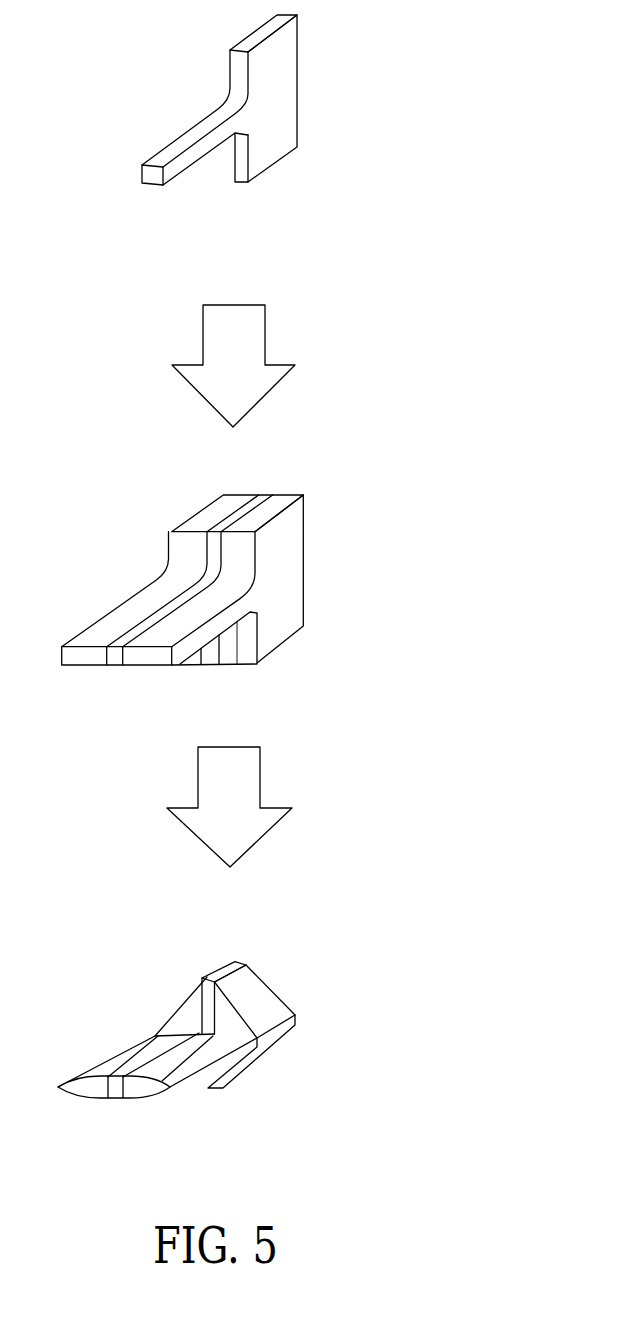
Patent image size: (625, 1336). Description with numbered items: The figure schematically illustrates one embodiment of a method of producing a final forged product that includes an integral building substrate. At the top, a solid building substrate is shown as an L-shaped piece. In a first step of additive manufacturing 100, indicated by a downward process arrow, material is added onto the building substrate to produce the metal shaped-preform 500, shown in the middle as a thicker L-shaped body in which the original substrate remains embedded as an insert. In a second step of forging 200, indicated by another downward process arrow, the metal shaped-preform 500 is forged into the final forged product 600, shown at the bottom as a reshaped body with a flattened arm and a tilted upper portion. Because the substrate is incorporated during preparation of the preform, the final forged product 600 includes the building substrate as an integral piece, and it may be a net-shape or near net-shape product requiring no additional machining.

The metal shaped-preform 500 is at (261, 531).
The final forged product 600 is at (244, 976).
The preparing step / additive manufacturing 100 is at (233, 366).
The forging step 200 is at (229, 807).